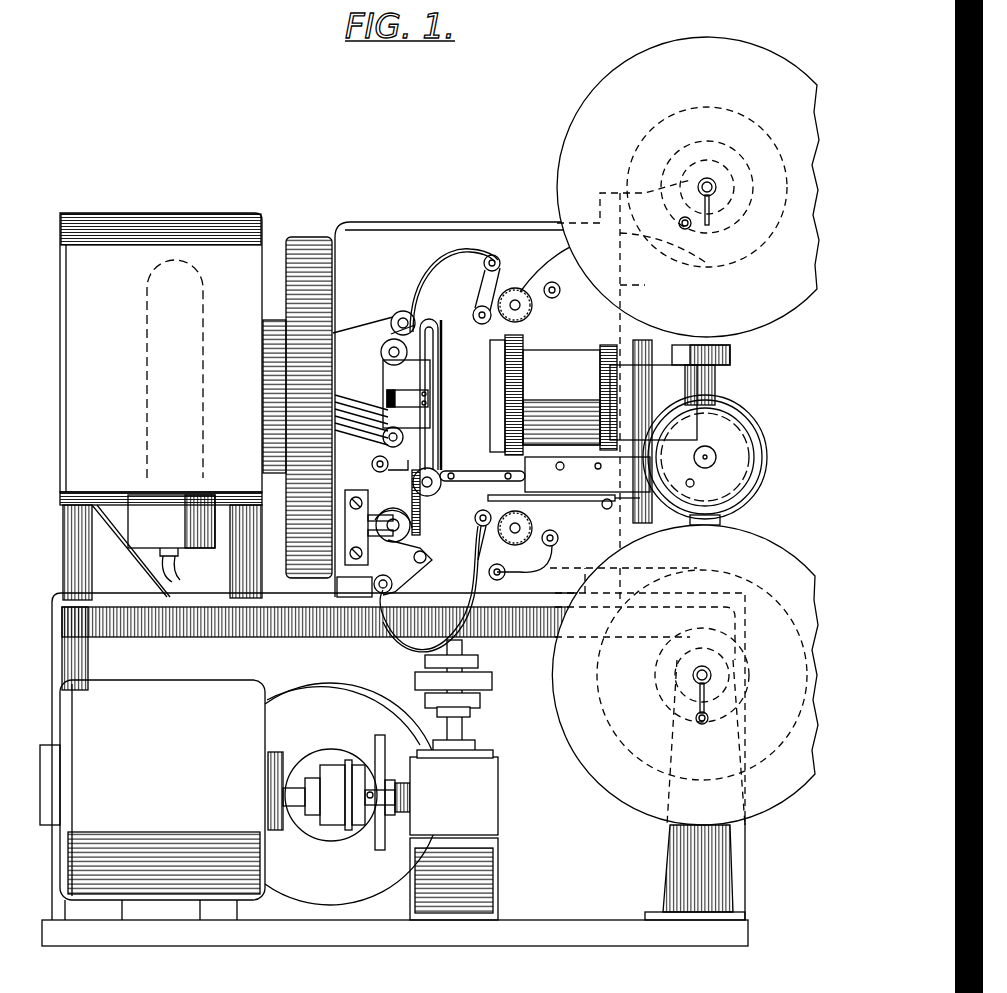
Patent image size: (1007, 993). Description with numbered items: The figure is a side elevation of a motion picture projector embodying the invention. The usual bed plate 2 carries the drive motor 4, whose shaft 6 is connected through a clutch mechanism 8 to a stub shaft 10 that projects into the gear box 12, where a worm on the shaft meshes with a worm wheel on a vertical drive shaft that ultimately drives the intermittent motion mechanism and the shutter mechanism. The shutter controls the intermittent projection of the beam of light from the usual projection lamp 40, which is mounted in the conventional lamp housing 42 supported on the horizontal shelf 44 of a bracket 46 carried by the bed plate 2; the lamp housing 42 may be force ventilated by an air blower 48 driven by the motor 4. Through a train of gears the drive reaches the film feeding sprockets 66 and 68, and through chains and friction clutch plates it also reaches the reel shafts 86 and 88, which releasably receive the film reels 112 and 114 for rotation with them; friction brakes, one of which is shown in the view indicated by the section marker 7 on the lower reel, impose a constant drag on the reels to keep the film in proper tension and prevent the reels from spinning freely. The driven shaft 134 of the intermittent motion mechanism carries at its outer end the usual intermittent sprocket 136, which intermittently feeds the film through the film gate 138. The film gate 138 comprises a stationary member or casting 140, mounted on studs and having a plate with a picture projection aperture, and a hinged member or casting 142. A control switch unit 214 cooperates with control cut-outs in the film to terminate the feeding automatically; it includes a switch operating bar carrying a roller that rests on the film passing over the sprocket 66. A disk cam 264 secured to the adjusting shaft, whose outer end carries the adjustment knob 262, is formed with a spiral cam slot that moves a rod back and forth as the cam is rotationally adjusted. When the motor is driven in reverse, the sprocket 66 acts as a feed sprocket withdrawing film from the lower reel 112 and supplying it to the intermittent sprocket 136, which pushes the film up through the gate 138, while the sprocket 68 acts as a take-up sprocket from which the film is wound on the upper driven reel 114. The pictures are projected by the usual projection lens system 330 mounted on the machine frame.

The bed plate 2 is at (158, 934).
The drive motor 4 is at (222, 886).
The shaft 6 is at (300, 800).
The section line 7- 7 is at (682, 646).
The clutch mechanism 8 is at (335, 420).
The stub shaft 10 is at (387, 778).
The gear box 12 is at (490, 772).
The projection lamp 40 is at (147, 375).
The lamp housing 42 is at (262, 231).
The horizontal shelf 44 is at (523, 632).
The bracket 46 is at (672, 875).
The air blower 48 is at (322, 693).
The film feeding sprocket 66 is at (516, 546).
The film feeding sprocket 68 is at (528, 288).
The reel shaft 86 is at (693, 677).
The reel shaft 88 is at (714, 183).
The film reel 112 is at (622, 793).
The film reel 114 is at (565, 160).
The drive shaft 134 is at (398, 537).
The intermittent sprocket 136 is at (385, 512).
The film gate 138 is at (444, 359).
The stationary member 140 is at (372, 430).
The hinged member 142 is at (427, 423).
The control switch unit 214 is at (568, 500).
The adjustment knob 262 is at (738, 428).
The disk cam 264 is at (712, 400).
The projection lens system 330 is at (560, 358).